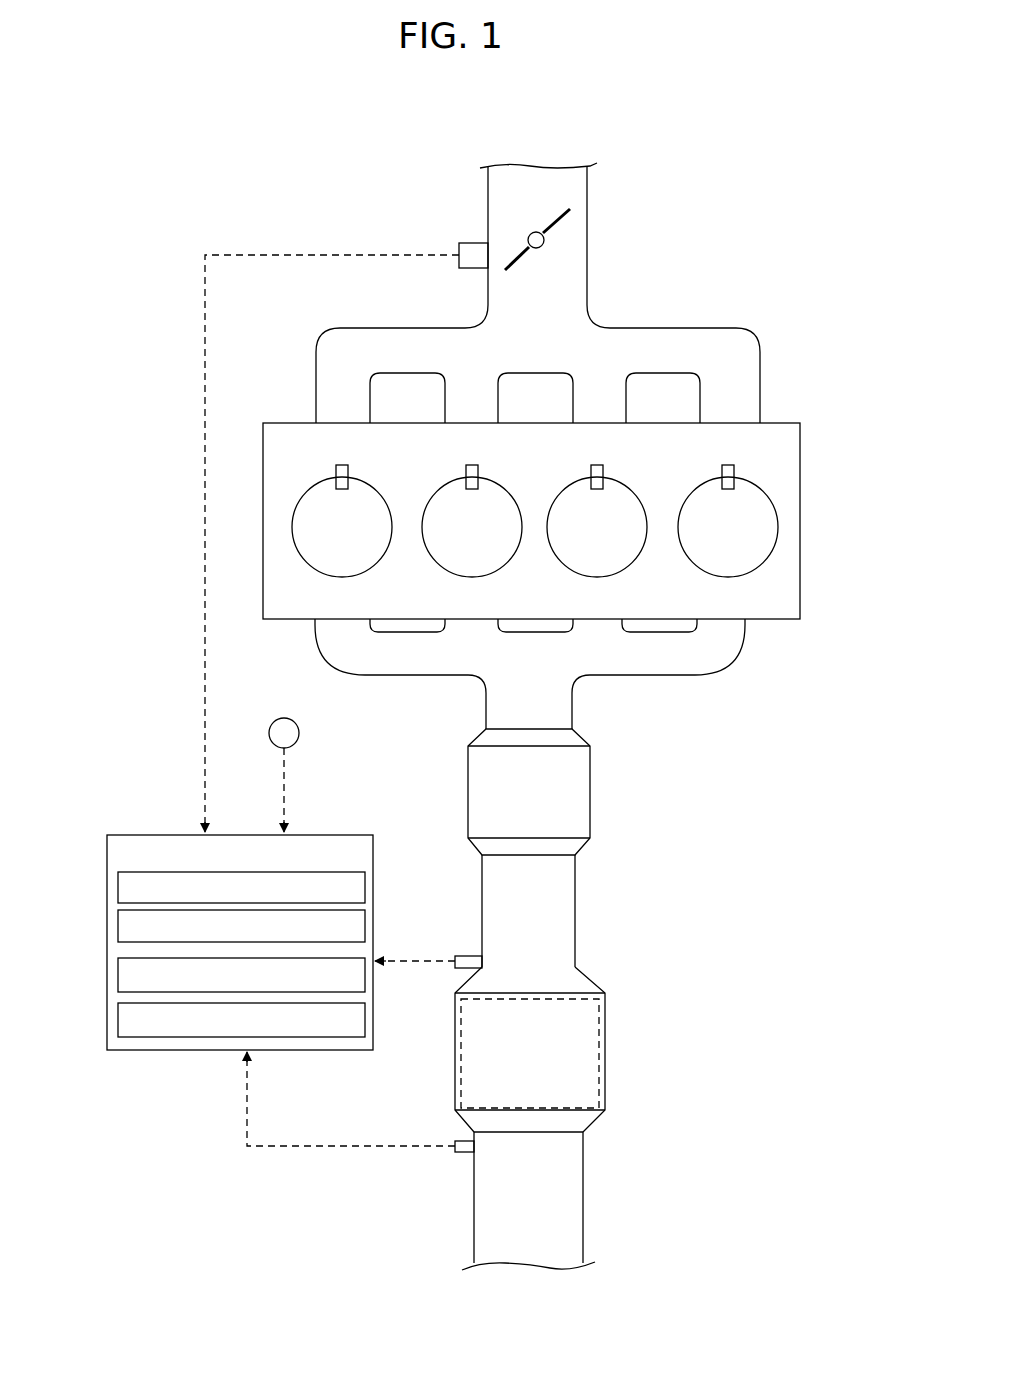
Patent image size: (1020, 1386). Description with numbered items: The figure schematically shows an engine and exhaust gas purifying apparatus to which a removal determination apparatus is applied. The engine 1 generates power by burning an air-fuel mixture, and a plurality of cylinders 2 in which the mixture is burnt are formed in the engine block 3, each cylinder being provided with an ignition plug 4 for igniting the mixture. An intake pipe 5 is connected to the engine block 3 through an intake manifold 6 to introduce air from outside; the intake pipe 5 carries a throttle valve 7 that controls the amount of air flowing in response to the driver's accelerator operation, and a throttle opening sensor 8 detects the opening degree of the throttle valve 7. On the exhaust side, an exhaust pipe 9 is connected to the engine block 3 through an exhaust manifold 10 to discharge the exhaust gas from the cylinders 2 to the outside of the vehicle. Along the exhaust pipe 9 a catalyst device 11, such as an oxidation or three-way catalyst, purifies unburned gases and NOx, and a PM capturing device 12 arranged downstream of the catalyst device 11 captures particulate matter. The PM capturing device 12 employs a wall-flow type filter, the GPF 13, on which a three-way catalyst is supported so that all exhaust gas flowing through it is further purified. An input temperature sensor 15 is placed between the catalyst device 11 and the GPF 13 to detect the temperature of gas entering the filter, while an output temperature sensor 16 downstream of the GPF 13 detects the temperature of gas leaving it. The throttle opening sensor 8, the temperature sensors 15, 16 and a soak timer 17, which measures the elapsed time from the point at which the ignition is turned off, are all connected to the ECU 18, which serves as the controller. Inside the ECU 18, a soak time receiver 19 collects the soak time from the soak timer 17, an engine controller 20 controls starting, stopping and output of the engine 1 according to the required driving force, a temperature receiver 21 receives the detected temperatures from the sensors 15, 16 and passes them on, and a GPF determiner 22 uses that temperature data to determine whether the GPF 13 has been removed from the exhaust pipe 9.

The engine 1 is at (825, 290).
The cylinder 2 is at (430, 556).
The engine block 3 is at (790, 457).
The ignition plug 4 is at (348, 478).
The intake pipe 5 is at (588, 247).
The intake manifold 6 is at (680, 328).
The throttle valve 7 is at (580, 218).
The throttle opening sensor 8 is at (472, 243).
The exhaust pipe 9 is at (486, 708).
The exhaust manifold 10 is at (644, 676).
The catalyst device 11 is at (468, 790).
The PM capturing device 12 is at (613, 975).
The GPF 13 is at (583, 1050).
The input temperature sensor 15 is at (468, 956).
The output temperature sensor 16 is at (462, 1153).
The soak timer 17 is at (299, 733).
The electronic control unit 18 is at (190, 1050).
The soak time receiver 19 is at (118, 887).
The engine controller 20 is at (118, 927).
The temperature receiver 21 is at (118, 975).
The GPF determiner 22 is at (118, 1021).